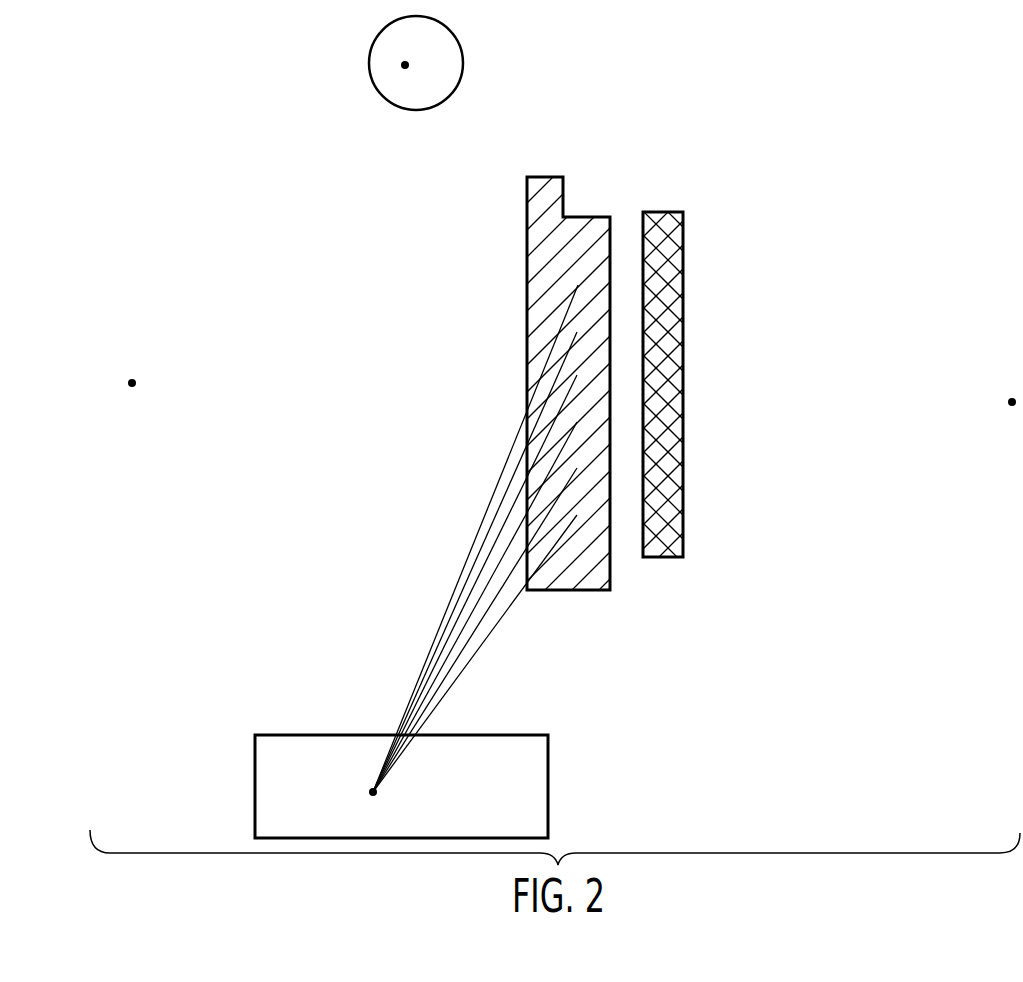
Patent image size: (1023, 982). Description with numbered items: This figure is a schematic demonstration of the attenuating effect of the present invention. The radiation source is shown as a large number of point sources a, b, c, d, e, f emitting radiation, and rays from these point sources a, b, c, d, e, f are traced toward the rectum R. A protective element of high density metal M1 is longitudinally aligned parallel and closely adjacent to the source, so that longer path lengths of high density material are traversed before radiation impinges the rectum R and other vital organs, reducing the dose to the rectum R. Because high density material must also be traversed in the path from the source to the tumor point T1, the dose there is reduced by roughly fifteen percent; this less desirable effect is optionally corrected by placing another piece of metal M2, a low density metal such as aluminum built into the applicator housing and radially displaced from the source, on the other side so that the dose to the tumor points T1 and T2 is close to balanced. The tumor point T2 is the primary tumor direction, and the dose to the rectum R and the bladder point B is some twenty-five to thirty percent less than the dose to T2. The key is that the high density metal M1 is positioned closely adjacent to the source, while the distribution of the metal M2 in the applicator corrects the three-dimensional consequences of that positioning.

The bladder point B is at (416, 63).
The tumor point T1 is at (114, 356).
The tumor point T2 is at (993, 376).
The rectum R is at (401, 786).
The high density metal protective element M1 is at (572, 178).
The low density metal M2 is at (679, 566).
The point source a is at (483, 523).
The point source b is at (483, 545).
The point source c is at (482, 567).
The point source d is at (483, 591).
The point source e is at (483, 614).
The point source f is at (482, 637).